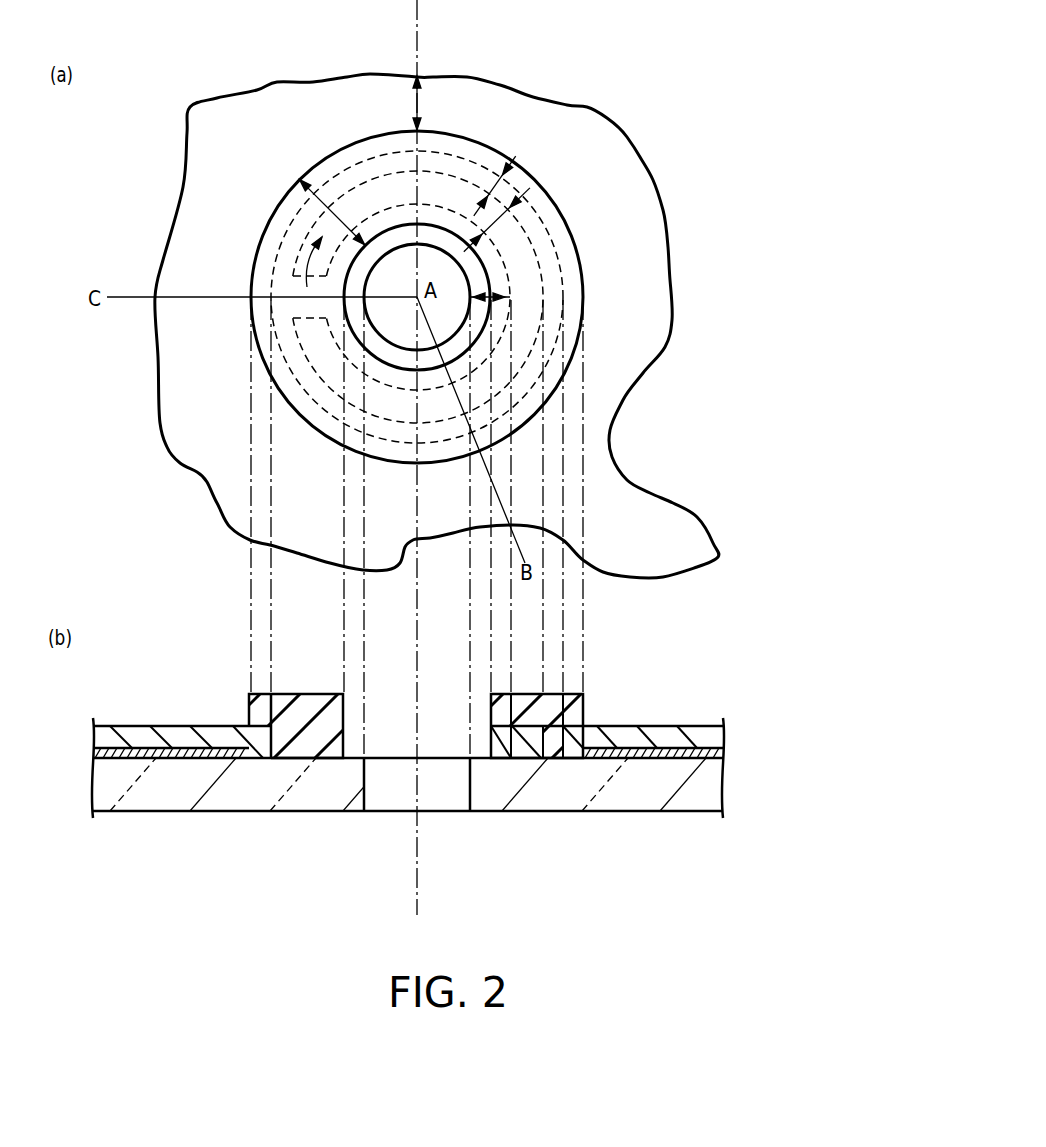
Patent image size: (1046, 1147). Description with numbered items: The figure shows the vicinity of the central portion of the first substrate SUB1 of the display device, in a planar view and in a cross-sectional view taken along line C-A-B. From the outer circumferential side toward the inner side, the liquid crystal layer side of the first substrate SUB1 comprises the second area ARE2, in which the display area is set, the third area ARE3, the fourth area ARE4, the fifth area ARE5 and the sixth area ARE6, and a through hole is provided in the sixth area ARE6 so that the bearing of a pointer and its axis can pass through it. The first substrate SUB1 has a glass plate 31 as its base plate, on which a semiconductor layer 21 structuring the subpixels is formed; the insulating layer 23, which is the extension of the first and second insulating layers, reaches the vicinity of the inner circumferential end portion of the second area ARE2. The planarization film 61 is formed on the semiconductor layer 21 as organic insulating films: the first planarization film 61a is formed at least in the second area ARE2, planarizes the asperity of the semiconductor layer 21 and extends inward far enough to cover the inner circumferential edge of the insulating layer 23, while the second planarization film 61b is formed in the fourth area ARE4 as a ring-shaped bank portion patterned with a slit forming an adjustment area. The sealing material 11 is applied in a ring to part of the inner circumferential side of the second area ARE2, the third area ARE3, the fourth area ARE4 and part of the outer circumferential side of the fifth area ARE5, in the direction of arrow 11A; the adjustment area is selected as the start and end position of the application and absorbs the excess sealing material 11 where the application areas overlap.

The sealing material 11 is at (548, 830).
The arrow 11A is at (310, 258).
The semiconductor layer 21 is at (160, 752).
The insulating layer 23 is at (228, 752).
The glass plate 31 is at (483, 795).
The planarization film 61 is at (202, 183).
The first planarization film 61a is at (137, 735).
The second planarization film 61b is at (528, 733).
The first substrate SUB1 is at (742, 792).
The second area ARE2 is at (420, 100).
The third area ARE3 is at (528, 186).
The fourth area ARE4 is at (512, 230).
The fifth area ARE5 is at (503, 292).
The sixth area ARE6 is at (447, 312).